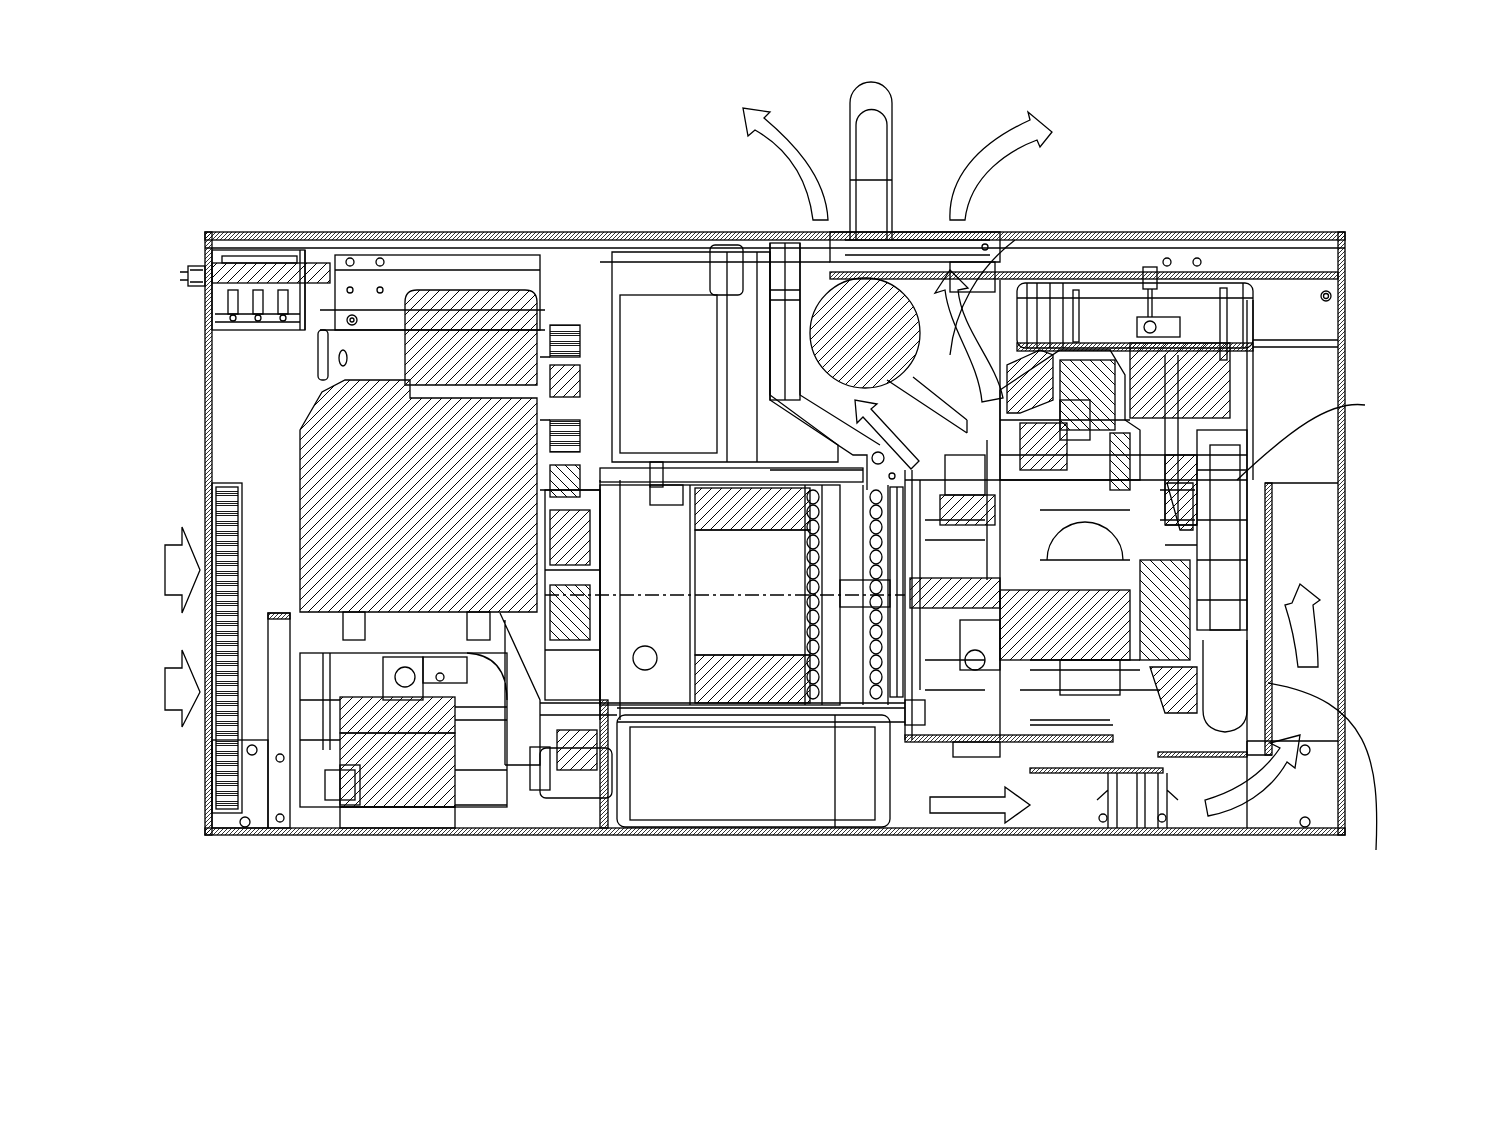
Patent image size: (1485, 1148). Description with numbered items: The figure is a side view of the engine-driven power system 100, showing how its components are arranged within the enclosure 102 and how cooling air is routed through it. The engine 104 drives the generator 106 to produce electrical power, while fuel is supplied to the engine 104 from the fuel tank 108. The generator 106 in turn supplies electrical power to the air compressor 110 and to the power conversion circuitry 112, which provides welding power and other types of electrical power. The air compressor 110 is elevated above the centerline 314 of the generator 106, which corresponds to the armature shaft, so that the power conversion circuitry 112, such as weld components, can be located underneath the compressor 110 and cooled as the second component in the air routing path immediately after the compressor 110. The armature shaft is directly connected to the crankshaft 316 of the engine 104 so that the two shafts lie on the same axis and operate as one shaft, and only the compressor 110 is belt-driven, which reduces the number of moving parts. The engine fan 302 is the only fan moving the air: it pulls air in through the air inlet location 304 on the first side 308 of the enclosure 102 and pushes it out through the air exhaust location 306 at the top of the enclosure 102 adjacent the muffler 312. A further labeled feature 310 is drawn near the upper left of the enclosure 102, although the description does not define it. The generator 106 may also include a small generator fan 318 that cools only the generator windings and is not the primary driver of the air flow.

The power system 100 is at (198, 92).
The enclosure 102 is at (400, 226).
The engine 104 is at (1022, 712).
The generator 106 is at (708, 690).
The fuel tank 108 is at (788, 798).
The air compressor 110 is at (362, 428).
The power conversion circuitry 112 is at (437, 800).
The engine fan 302 is at (1262, 572).
The air inlet location 304 is at (207, 496).
The air exhaust location 306 is at (1018, 102).
The first side of the enclosure 308 is at (200, 246).
The cold side compartment 310 is at (250, 182).
The muffler 312 is at (900, 362).
The centerline 314 is at (763, 600).
The crankshaft 316 is at (878, 708).
The generator fan 318 is at (898, 665).